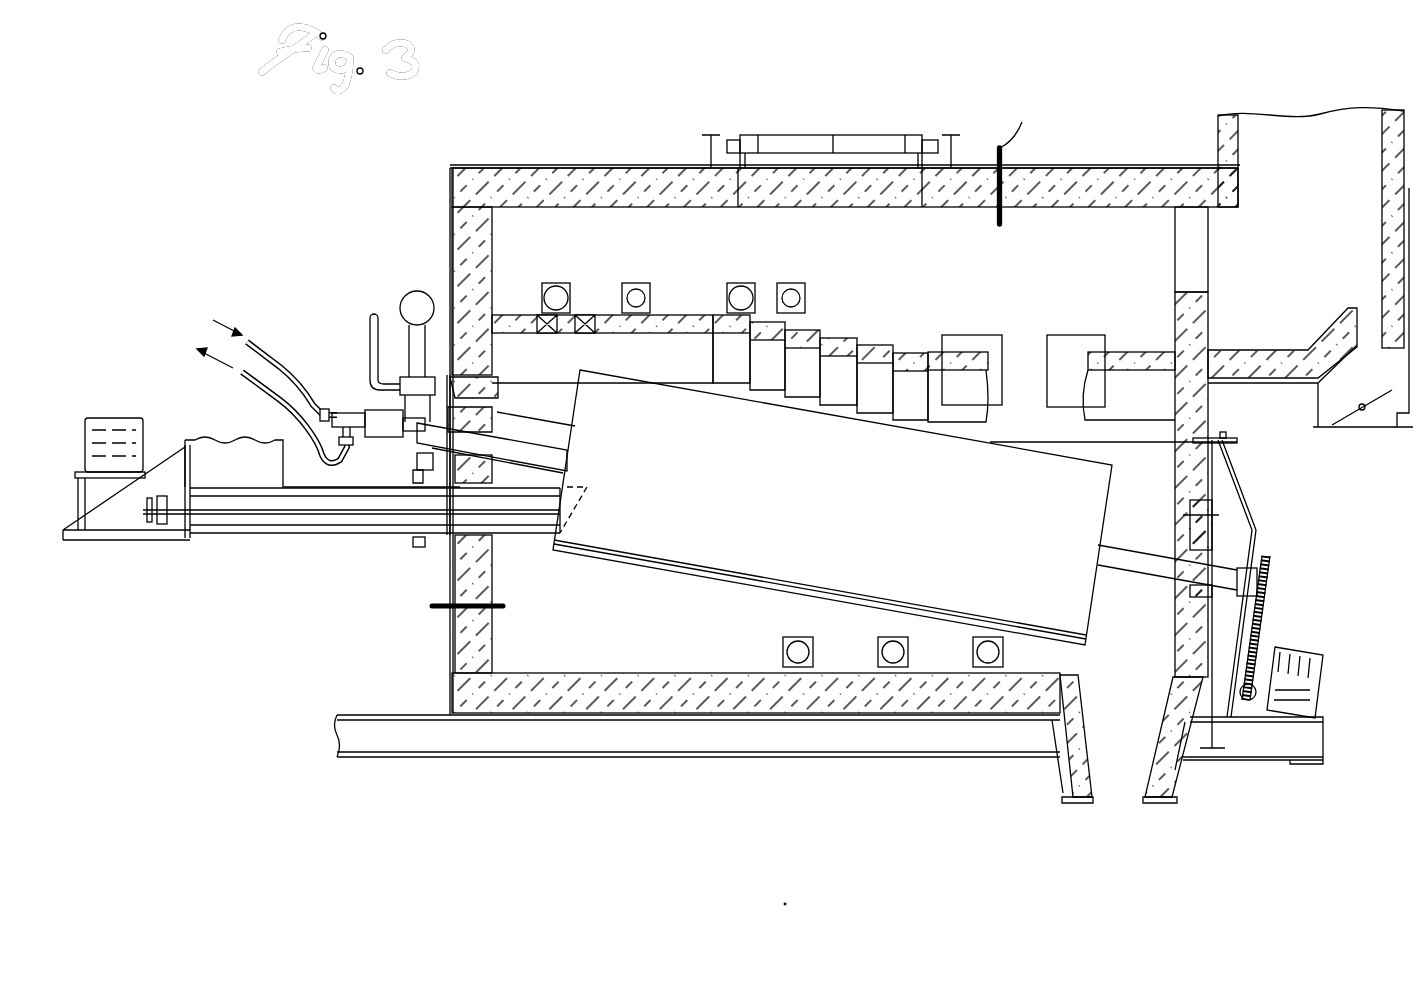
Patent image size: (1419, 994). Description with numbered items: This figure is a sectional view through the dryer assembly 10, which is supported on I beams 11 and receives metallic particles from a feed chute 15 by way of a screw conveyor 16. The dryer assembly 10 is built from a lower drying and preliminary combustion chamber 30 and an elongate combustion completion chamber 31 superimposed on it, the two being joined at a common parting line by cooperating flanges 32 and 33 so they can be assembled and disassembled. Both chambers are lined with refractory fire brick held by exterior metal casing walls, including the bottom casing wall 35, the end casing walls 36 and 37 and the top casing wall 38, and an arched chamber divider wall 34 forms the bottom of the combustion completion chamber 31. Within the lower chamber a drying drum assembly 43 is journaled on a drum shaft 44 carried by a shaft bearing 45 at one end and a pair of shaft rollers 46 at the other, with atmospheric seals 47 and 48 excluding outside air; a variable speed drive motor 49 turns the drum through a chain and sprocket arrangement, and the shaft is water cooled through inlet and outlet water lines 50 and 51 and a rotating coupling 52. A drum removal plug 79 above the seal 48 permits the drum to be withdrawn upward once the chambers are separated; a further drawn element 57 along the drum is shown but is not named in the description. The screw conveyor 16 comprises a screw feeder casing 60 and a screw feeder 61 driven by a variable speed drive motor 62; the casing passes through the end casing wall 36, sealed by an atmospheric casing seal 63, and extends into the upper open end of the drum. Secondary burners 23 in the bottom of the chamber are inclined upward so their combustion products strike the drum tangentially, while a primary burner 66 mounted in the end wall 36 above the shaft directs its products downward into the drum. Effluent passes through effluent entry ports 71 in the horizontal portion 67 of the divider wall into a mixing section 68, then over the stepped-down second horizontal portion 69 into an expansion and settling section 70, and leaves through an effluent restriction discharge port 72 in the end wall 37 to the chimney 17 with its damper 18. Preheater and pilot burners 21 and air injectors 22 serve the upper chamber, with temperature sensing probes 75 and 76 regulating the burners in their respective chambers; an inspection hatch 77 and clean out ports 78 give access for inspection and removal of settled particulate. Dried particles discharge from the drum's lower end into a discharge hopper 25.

The dryer assembly 10 is at (1085, 250).
The I beams 11 is at (380, 742).
The feed chute 15 is at (230, 458).
The screw conveyor 16 is at (240, 528).
The chimney 17 is at (1340, 145).
The damper 18 is at (1372, 428).
The preheater and pilot burners 21 is at (628, 283).
The air injectors 22 is at (558, 283).
The secondary burners 23 is at (798, 668).
The discharge hopper 25 is at (1205, 775).
The drying and preliminary combustion chamber 30 is at (720, 668).
The combustion completion chamber 31 is at (888, 235).
The flange 32 is at (1240, 441).
The flange 33 is at (1240, 500).
The chamber divider wall 34 is at (698, 317).
The bottom casing wall 35 is at (880, 725).
The end casing wall 36 is at (457, 240).
The end casing wall 37 is at (1290, 400).
The top casing wall 38 is at (1077, 347).
The drying drum assembly 43 is at (672, 562).
The drum shaft 44 is at (1135, 585).
The shaft bearing 45 is at (1262, 565).
The shaft rollers 46 is at (420, 472).
The atmospheric seal 47 is at (430, 492).
The atmospheric seal 48 is at (1265, 612).
The variable speed drive motor 49 is at (1325, 690).
The inlet water line 50 is at (283, 352).
The outlet water line 51 is at (258, 382).
The rotating coupling 52 is at (383, 420).
The drum wall 57 is at (611, 552).
The screw feeder casing 60 is at (300, 516).
The screw feeder 61 is at (165, 514).
The variable speed drive motor 62 is at (125, 512).
The atmospheric casing seal 63 is at (418, 547).
The primary burner 66 is at (413, 388).
The horizontal extending portion 67 is at (612, 317).
The mixing section 68 is at (671, 247).
The second horizontal portion 69 is at (1147, 280).
The expansion and settling section 70 is at (987, 253).
The effluent entry ports 71 is at (540, 316).
The effluent restriction discharge port 72 is at (1205, 262).
The temperature sensing probe 75 is at (487, 675).
The temperature sensing probe 76 is at (1000, 215).
The inspection hatch 77 is at (800, 150).
The clean out ports 78 is at (1138, 347).
The drum removal plug 79 is at (1210, 525).